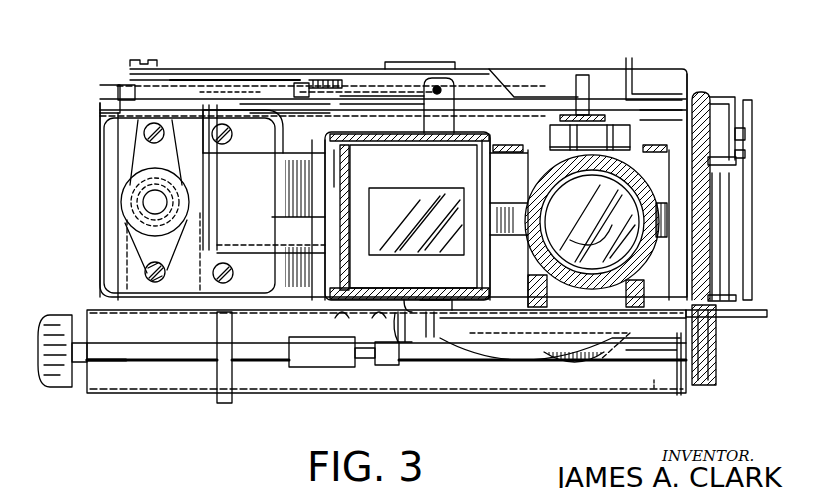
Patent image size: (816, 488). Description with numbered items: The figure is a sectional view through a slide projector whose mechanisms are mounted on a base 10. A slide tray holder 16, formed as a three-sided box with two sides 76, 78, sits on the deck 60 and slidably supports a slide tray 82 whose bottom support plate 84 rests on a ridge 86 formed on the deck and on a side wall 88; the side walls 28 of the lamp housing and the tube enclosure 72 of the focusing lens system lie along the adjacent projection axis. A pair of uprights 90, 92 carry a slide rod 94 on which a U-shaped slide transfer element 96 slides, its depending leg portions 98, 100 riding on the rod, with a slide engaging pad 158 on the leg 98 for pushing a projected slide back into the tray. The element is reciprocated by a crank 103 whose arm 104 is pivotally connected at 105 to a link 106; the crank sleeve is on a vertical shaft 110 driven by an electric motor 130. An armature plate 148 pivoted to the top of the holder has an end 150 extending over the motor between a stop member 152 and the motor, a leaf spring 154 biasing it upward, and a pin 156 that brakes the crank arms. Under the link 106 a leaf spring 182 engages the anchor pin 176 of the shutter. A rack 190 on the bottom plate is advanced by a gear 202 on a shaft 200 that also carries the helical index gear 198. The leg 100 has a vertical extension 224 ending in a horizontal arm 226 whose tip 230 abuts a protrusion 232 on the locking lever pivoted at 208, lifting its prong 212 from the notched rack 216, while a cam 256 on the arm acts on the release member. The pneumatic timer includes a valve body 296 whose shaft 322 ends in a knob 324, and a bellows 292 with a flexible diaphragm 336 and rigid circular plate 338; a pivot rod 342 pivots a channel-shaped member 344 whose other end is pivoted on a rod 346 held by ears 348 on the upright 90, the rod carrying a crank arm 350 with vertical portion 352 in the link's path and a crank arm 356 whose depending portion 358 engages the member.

The base 10 is at (203, 423).
The slide tray holder 16 is at (340, 130).
The side walls 28 is at (684, 83).
The deck 60 is at (265, 314).
The tube enclosure 72 is at (664, 195).
The side 76 is at (345, 152).
The side 78 is at (478, 150).
The slide tray 82 is at (377, 315).
The bottom support plate 84 is at (412, 299).
The ridge 86 is at (340, 316).
The side wall 88 is at (349, 261).
The upright 90 is at (751, 100).
The upright 92 is at (100, 130).
The slide rod 94 is at (263, 82).
The slide transfer element 96 is at (282, 108).
The leg portion 98 is at (235, 137).
The leg portion 100 is at (523, 155).
The crank 103 is at (322, 80).
The arm 104 is at (182, 82).
The pivot connection 105 is at (130, 77).
The link 106 is at (476, 68).
The shaft 110 is at (227, 83).
The electric motor 130 is at (110, 232).
The armature plate 148 is at (369, 93).
The end of armature plate 150 is at (105, 95).
The stop member 152 is at (118, 88).
The leaf spring 154 is at (180, 83).
The pin 156 is at (302, 83).
The slide engaging pad 158 is at (334, 189).
The anchor pin 176 is at (584, 75).
The leaf spring 182 is at (409, 76).
The rack 190 is at (350, 282).
The helical index gear 198 is at (212, 276).
The shaft 200 is at (140, 247).
The gear 202 is at (349, 242).
The pivot 208 is at (386, 364).
The prong 212 is at (428, 266).
The rack 216 is at (452, 299).
The vertical extension 224 is at (525, 250).
The arm 226 is at (520, 363).
The outer tip 230 is at (405, 345).
The protrusion 232 is at (404, 345).
The cam 256 is at (448, 340).
The bellows 292 is at (704, 90).
The valve body 296 is at (292, 366).
The shaft 322 is at (126, 350).
The knob 324 is at (62, 387).
The flexible diaphragm 336 is at (716, 367).
The rigid circular plate 338 is at (716, 347).
The pivot rod 342 is at (718, 247).
The channel-shaped member 344 is at (712, 209).
The rod 346 is at (727, 229).
The ears 348 is at (737, 170).
The crank arm 350 is at (657, 100).
The vertical portion 352 is at (629, 58).
The crank arm 356 is at (735, 137).
The depending portion 358 is at (738, 159).